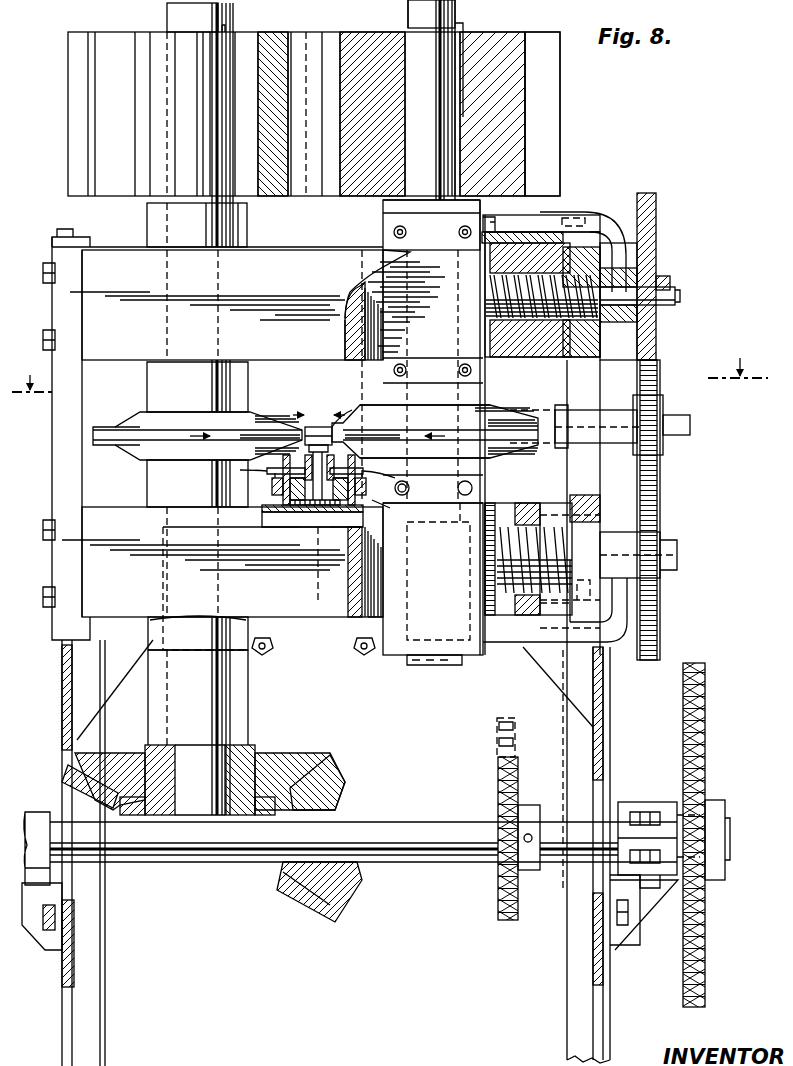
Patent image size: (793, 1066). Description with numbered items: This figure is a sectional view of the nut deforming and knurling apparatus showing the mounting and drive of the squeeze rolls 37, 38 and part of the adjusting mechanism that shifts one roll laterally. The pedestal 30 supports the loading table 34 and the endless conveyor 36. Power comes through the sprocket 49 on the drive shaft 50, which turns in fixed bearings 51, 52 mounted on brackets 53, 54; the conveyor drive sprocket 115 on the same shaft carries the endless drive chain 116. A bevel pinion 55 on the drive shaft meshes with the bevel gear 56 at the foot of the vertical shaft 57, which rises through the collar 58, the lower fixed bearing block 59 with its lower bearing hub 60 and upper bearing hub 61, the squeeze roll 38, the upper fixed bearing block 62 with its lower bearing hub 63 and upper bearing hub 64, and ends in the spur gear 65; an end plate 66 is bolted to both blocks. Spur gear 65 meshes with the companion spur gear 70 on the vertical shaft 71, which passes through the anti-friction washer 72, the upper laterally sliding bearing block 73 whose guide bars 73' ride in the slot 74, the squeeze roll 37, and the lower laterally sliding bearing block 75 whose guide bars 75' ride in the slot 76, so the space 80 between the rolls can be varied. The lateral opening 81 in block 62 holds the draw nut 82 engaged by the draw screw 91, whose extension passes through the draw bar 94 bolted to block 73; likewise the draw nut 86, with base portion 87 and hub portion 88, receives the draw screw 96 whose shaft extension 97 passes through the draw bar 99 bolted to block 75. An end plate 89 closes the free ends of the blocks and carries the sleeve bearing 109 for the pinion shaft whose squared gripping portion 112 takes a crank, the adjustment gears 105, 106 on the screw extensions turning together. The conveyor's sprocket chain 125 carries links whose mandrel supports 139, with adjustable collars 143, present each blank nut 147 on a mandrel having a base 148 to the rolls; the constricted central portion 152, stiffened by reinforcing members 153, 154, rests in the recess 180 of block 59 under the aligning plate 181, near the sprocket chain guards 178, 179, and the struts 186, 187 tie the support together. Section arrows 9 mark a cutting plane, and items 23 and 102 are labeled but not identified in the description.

The section line 9- 9 is at (390, 372).
The cutter head 23 is at (348, 300).
The pedestal 30 is at (604, 1000).
The loading table 34 is at (70, 1040).
The endless conveyor 36 is at (400, 510).
The squeeze roll 37 is at (508, 425).
The squeeze roll 38 is at (110, 430).
The sprocket 49 is at (705, 722).
The drive shaft 50 is at (418, 822).
The fixed bearing 51 is at (636, 802).
The fixed bearing 52 is at (38, 812).
The bracket 53 is at (625, 925).
The bracket 54 is at (42, 928).
The bevel pinion 55 is at (340, 895).
The bevel gear 56 is at (288, 755).
The vertical shaft 57 is at (170, 18).
The collar 58 is at (153, 702).
The lower fixed bearing block 59 is at (97, 605).
The lower bearing hub 60 is at (147, 654).
The upper bearing hub 61 is at (155, 489).
The upper fixed bearing block 62 is at (97, 315).
The lower bearing hub 63 is at (245, 400).
The upper bearing hub 64 is at (147, 230).
The spur gear 65 is at (70, 135).
The end plate 66 is at (55, 465).
The companion spur gear 70 is at (553, 104).
The vertical shaft 71 is at (405, 16).
The anti-friction washer 72 is at (383, 204).
The upper laterally sliding bearing block 73 is at (478, 415).
The guide bars 73' is at (416, 300).
The slot 74 is at (348, 330).
The lower laterally sliding bearing block 75 is at (431, 598).
The guide bars 75' is at (453, 430).
The slot 76 is at (372, 605).
The variable space 80 is at (319, 451).
The lateral opening 81 is at (540, 247).
The draw nut 82 is at (640, 262).
The draw nut 86 is at (518, 496).
The base portion 87 is at (506, 618).
The cylindrical hub portion 88 is at (532, 525).
The end plate 89 is at (595, 385).
The draw screw 91 is at (522, 298).
The draw bar 94 is at (605, 212).
The draw screw 96 is at (600, 512).
The shaft extension 97 is at (678, 560).
The draw bar 99 is at (608, 648).
The pinion 102 is at (660, 408).
The squeeze roll adjustment gear 105 is at (656, 205).
The squeeze roll adjustment gear 106 is at (660, 624).
The sleeve bearing 109 is at (612, 412).
The gripping portion 112 is at (690, 418).
The conveyor drive sprocket 115 is at (500, 875).
The endless drive chain 116 is at (497, 735).
The endless sprocket chain 125 is at (368, 485).
The mandrel support 139 is at (280, 530).
The collar 143 is at (265, 490).
The blank nut 147 is at (335, 425).
The laterally extending base 148 is at (362, 470).
The constricted central portion 152 is at (272, 524).
The reinforcing member 153 is at (365, 500).
The reinforcing member 154 is at (262, 515).
The sprocket chain guard 178 is at (426, 491).
The sprocket chain guard 179 is at (245, 471).
The recess 180 is at (295, 527).
The aligning plate 181 is at (310, 548).
The strut 186 is at (372, 660).
The strut 187 is at (265, 655).